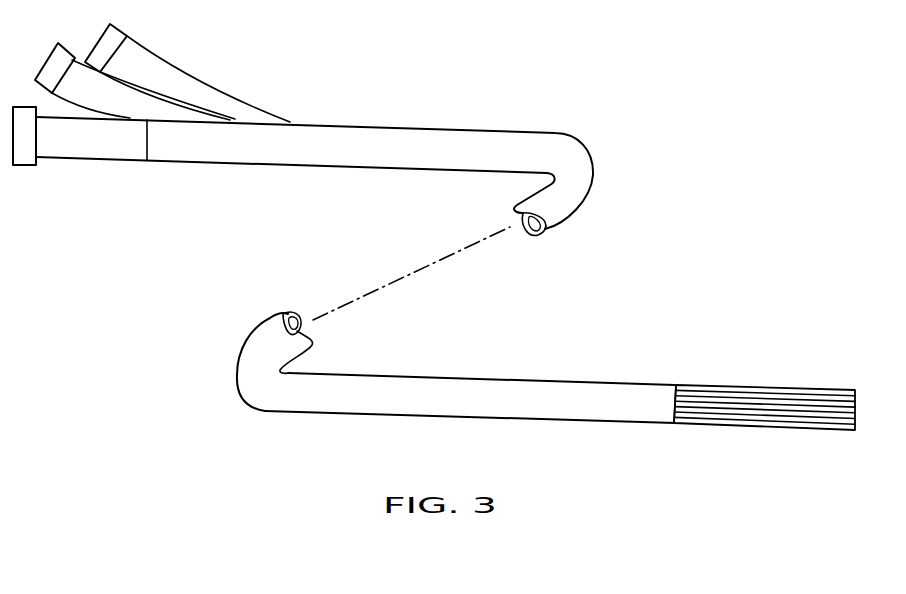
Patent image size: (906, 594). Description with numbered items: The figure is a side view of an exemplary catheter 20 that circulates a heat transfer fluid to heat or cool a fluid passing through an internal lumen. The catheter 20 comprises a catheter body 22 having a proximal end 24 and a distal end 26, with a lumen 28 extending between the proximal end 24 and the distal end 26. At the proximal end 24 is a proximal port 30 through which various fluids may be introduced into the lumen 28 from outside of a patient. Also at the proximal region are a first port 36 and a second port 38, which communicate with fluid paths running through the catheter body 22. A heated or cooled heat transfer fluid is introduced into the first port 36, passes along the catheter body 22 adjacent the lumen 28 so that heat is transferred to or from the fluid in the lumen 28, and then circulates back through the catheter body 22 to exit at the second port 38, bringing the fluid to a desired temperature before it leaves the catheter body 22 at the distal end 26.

The catheter 20 is at (580, 91).
The catheter body 22 is at (525, 395).
The proximal end 24 is at (158, 143).
The distal end 26 is at (777, 383).
The lumen 28 is at (700, 400).
The proximal port 30 is at (90, 143).
The first port 36 is at (77, 70).
The second port 38 is at (150, 63).